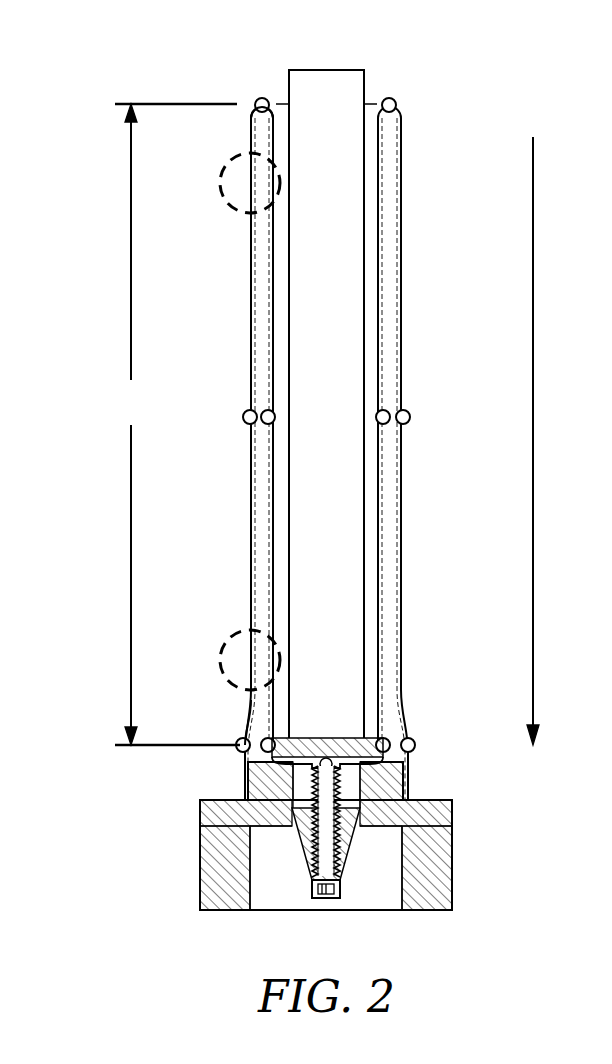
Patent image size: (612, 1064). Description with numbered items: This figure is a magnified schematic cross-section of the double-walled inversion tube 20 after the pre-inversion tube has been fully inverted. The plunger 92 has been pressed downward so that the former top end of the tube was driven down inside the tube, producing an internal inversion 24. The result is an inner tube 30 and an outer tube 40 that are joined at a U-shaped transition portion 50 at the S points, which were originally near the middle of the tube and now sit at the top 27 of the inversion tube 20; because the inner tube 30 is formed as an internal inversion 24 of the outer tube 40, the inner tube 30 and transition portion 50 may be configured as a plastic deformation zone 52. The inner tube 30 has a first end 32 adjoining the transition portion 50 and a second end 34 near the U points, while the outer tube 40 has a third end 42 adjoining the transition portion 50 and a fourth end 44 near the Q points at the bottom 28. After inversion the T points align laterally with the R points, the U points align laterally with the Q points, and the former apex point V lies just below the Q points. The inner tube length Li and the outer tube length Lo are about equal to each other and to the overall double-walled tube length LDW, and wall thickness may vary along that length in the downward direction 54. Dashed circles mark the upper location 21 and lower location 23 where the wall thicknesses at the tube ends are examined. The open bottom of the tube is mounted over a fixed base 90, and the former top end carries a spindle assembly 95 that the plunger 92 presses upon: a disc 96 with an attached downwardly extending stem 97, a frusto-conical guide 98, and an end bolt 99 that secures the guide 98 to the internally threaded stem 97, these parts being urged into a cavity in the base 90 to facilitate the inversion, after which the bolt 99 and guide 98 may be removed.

The double-walled inversion tube 20 is at (276, 493).
The internal inversion 24 is at (436, 136).
The plunger 92 is at (297, 88).
The inner tube 30 is at (386, 232).
The outer tube 40 is at (401, 276).
The point S is at (371, 70).
The U-shaped transition portion 50 is at (371, 70).
The plastic deformation zone 52 is at (393, 104).
The point T is at (397, 413).
The point R is at (410, 417).
The point U is at (388, 742).
The point Q is at (413, 745).
The point V is at (392, 779).
The upper location 21 is at (219, 212).
The lower location 23 is at (217, 631).
The top 27 is at (140, 148).
The first end 32 is at (140, 148).
The third end 42 is at (226, 136).
The bottom 28 is at (126, 703).
The second end 34 is at (126, 703).
The fourth end 44 is at (218, 707).
The double-walled inversion tube length LDW is at (156, 424).
The inner tube length Li is at (156, 424).
The outer tube length Lo is at (156, 424).
The downward direction 54 is at (533, 465).
The disc 96 is at (300, 757).
The fixed base 90 is at (430, 860).
The spindle assembly 95 is at (382, 872).
The stem 97 is at (300, 810).
The frusto-conical guide 98 is at (308, 838).
The end bolt 99 is at (310, 892).